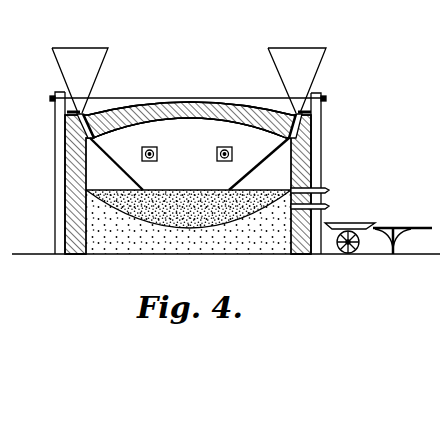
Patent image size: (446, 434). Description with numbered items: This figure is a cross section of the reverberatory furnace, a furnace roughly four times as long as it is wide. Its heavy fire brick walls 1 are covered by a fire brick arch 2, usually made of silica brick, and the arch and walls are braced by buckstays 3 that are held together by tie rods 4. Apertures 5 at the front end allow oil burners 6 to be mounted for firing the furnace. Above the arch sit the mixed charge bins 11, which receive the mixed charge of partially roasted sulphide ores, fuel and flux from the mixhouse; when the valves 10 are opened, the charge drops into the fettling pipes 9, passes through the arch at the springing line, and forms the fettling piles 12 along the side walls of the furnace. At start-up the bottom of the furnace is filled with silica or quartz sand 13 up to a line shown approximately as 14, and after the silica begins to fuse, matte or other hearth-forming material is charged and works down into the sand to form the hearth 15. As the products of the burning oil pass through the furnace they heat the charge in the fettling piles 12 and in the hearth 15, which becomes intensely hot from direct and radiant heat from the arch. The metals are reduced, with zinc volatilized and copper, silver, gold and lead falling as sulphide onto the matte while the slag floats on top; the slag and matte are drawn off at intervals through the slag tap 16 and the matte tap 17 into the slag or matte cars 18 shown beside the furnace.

The fire brick walls 1 is at (68, 179).
The fire brick arch 2 is at (174, 104).
The buckstays 3 is at (61, 90).
The tie rods 4 is at (252, 101).
The apertures 5 is at (149, 147).
The oil burners 6 is at (142, 154).
The fettling pipes 9 is at (85, 111).
The valves 10 is at (65, 117).
The mixed charge bins 11 is at (189, 93).
The fettling piles 12 is at (189, 164).
The silica or quartz sand 13 is at (188, 222).
The line 14 is at (241, 222).
The hearth 15 is at (188, 210).
The slag tap 16 is at (329, 190).
The matte tap 17 is at (329, 208).
The slag or matte cars 18 is at (352, 223).